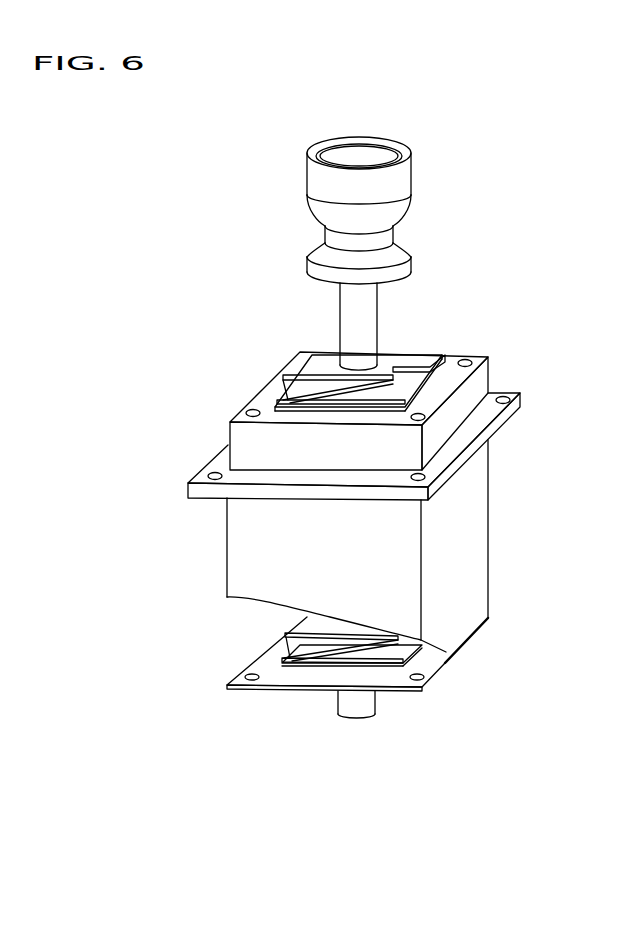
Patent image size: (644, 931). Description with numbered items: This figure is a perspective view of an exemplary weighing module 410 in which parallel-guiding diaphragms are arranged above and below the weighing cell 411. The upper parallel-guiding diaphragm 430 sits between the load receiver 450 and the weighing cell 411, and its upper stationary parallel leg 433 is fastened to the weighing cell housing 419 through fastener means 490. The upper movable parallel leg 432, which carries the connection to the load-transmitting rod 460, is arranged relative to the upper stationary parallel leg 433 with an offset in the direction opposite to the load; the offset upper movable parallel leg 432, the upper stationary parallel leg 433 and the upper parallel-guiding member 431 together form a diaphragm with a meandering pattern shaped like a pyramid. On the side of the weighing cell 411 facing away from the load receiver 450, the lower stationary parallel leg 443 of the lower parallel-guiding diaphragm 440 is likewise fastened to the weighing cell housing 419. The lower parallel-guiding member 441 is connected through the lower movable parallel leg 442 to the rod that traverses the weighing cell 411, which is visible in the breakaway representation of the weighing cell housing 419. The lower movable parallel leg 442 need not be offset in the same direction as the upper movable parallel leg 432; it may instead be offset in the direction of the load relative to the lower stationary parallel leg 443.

The weighing module 410 is at (342, 606).
The weighing cell 411 is at (540, 551).
The weighing cell housing 419 is at (248, 682).
The upper parallel-guiding diaphragm 430 is at (270, 304).
The upper parallel-guiding member 431 is at (231, 292).
The upper movable parallel leg 432 is at (510, 321).
The upper stationary parallel leg 433 is at (247, 334).
The lower parallel-guiding diaphragm 440 is at (394, 695).
The lower parallel-guiding member 441 is at (317, 702).
The lower movable parallel leg 442 is at (277, 704).
The lower stationary parallel leg 443 is at (456, 679).
The load receiver 450 is at (469, 193).
The load-transmitting rod 460 is at (485, 289).
The fastener means 490 is at (409, 418).